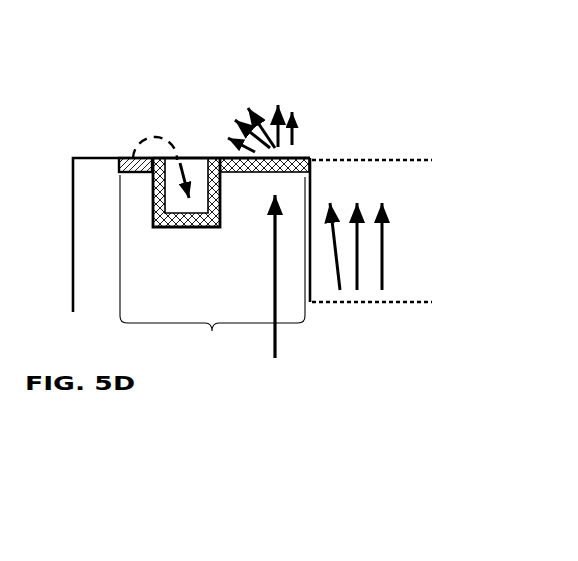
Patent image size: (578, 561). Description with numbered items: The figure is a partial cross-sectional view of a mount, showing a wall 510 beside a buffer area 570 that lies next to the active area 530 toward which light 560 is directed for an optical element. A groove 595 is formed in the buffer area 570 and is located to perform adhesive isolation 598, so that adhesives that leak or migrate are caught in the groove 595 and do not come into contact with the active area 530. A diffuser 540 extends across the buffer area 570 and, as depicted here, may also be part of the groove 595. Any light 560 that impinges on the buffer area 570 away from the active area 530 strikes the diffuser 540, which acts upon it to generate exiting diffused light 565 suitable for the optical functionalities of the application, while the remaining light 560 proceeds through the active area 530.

The wall 510 is at (95, 158).
The active area 530 is at (402, 233).
The diffuser 540 is at (220, 158).
The light 560 is at (363, 289).
The diffused light 565 is at (308, 153).
The buffer area 570 is at (212, 296).
The groove 595 is at (155, 229).
The adhesive isolation 598 is at (160, 130).